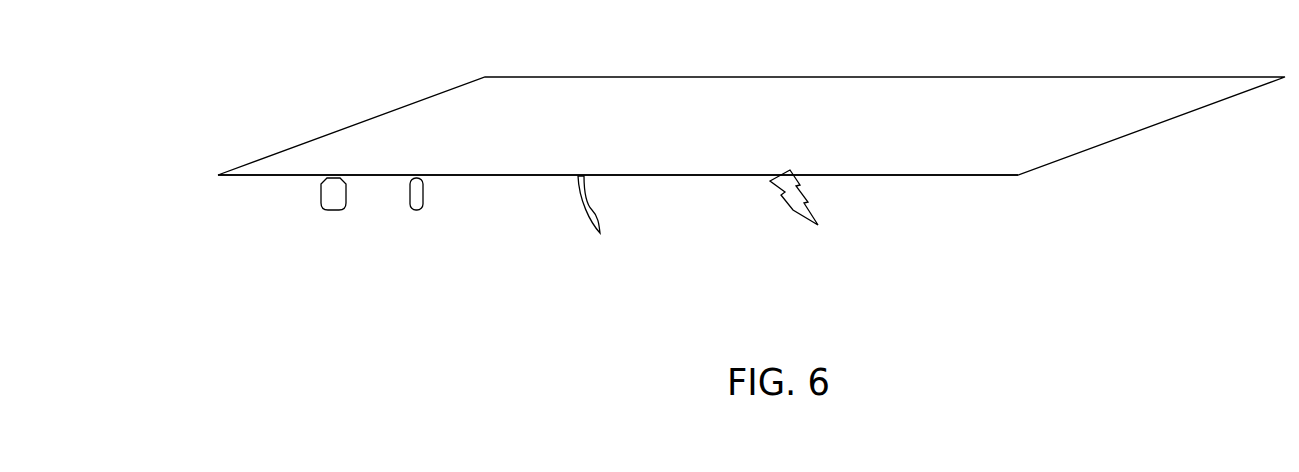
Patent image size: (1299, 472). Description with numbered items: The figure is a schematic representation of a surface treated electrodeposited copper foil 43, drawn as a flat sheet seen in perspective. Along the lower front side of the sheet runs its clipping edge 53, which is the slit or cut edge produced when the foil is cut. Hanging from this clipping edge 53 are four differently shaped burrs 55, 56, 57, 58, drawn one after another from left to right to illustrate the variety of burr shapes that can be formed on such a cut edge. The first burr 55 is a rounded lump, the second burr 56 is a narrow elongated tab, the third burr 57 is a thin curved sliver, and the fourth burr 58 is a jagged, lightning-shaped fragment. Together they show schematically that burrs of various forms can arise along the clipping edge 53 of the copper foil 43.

The surface treated electrodeposited copper foil 43 is at (885, 110).
The clipping edge 53 is at (933, 176).
The burr 55 is at (333, 212).
The burr 56 is at (415, 212).
The burr 57 is at (598, 237).
The burr 58 is at (805, 223).